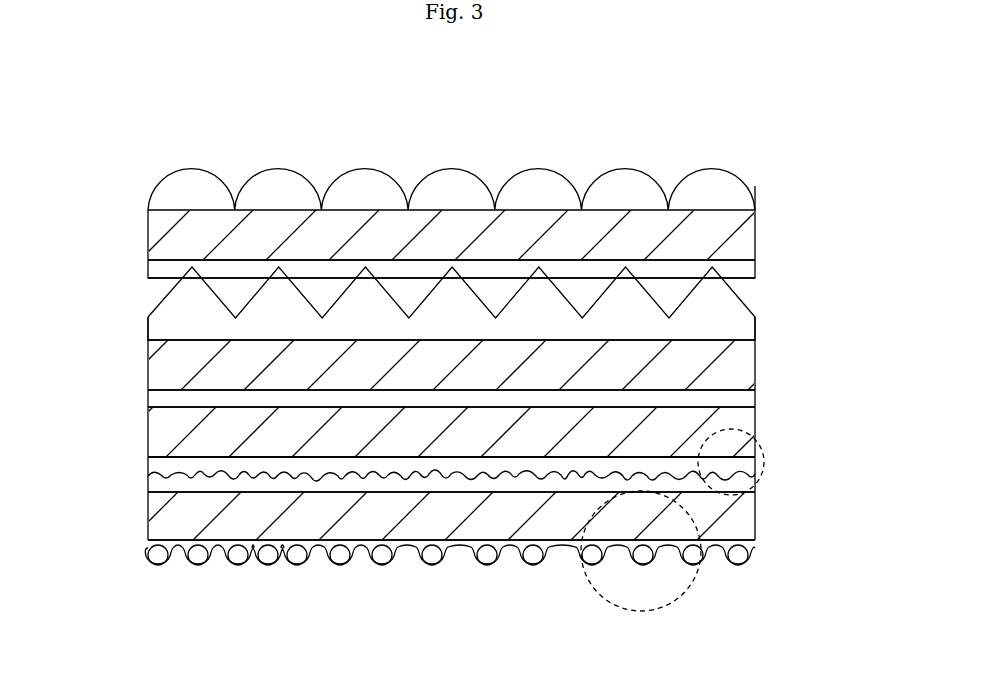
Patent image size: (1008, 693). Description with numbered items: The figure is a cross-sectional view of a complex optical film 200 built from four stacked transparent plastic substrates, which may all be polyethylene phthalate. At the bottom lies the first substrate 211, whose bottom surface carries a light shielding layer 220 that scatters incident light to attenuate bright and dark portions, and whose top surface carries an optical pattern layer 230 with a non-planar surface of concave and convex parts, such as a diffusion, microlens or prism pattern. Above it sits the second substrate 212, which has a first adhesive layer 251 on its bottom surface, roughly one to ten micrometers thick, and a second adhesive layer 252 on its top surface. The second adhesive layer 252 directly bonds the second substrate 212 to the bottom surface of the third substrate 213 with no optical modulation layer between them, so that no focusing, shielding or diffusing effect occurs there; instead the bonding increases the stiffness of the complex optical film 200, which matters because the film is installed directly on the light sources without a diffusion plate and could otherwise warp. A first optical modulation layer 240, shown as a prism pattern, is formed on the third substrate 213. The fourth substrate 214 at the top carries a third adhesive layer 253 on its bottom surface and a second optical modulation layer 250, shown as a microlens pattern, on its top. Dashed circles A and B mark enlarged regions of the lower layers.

The complex optical film 200 is at (551, 69).
The second optical modulation layer 250 is at (735, 192).
The fourth substrate 214 is at (165, 243).
The third adhesive layer 253 is at (732, 270).
The first optical modulation layer 240 is at (735, 314).
The third substrate 213 is at (165, 373).
The second adhesive layer 252 is at (735, 398).
The second substrate 212 is at (165, 441).
The first adhesive layer 251 is at (742, 458).
The optical pattern layer 230 is at (740, 486).
The first substrate 211 is at (165, 522).
The light shielding layer 220 is at (747, 560).
The enlarged region A is at (643, 611).
The enlarged region B is at (764, 470).